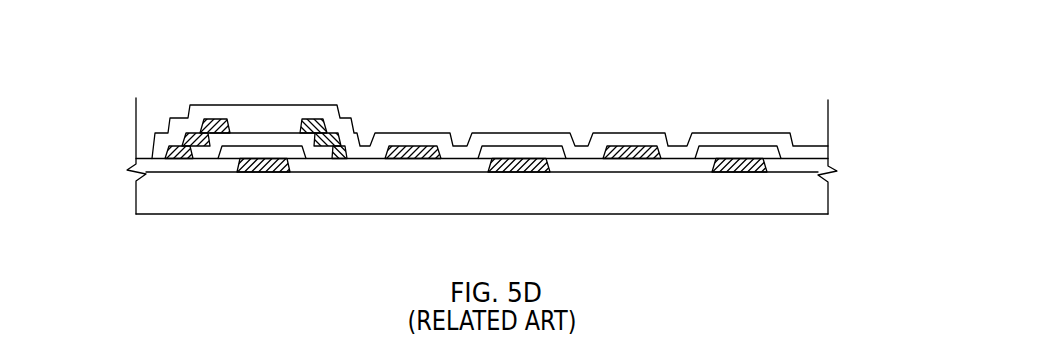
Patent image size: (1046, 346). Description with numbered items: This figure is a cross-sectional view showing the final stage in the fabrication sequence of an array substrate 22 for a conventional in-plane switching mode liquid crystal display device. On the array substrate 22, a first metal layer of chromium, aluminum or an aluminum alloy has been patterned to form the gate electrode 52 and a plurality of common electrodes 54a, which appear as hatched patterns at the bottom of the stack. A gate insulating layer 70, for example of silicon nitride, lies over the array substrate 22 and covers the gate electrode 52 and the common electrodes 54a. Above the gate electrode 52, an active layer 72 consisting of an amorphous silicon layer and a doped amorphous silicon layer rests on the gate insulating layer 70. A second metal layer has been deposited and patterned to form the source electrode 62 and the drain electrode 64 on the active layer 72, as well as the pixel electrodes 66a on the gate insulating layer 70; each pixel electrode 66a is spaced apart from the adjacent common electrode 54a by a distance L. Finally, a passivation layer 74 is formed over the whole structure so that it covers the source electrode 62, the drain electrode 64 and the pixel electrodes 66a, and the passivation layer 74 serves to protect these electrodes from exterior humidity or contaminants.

The array substrate 22 is at (478, 203).
The gate electrode 52 is at (265, 173).
The common electrodes 54a is at (517, 158).
The source electrode 62 is at (219, 119).
The drain electrode 64 is at (313, 119).
The pixel electrodes 66a is at (422, 146).
The gate insulating layer 70 is at (673, 171).
The active layer 72 is at (265, 138).
The passivation layer 74 is at (565, 141).